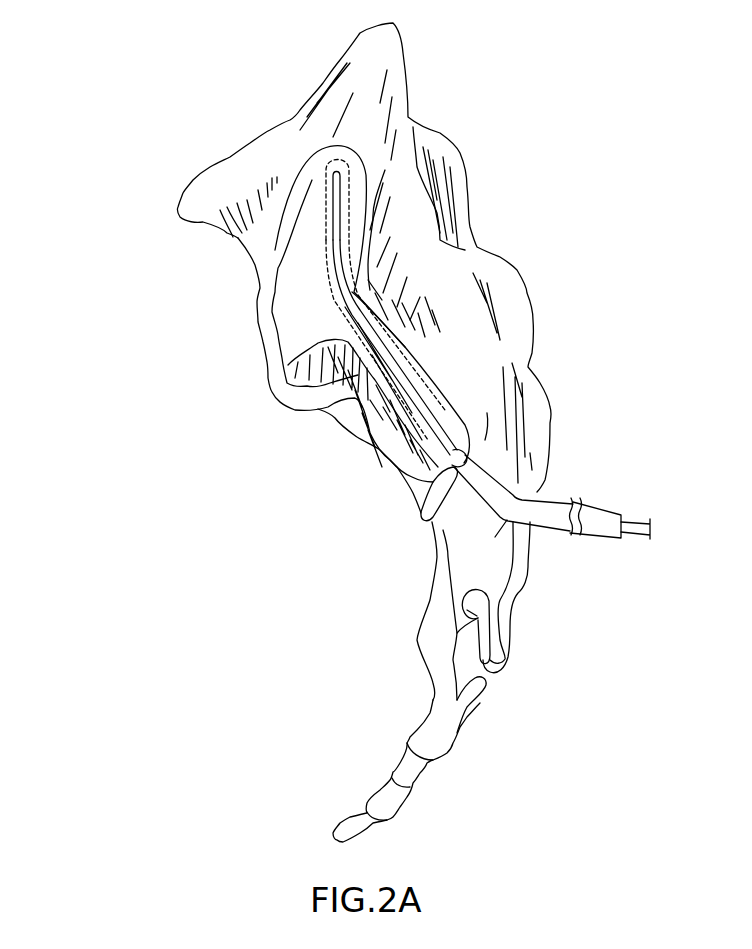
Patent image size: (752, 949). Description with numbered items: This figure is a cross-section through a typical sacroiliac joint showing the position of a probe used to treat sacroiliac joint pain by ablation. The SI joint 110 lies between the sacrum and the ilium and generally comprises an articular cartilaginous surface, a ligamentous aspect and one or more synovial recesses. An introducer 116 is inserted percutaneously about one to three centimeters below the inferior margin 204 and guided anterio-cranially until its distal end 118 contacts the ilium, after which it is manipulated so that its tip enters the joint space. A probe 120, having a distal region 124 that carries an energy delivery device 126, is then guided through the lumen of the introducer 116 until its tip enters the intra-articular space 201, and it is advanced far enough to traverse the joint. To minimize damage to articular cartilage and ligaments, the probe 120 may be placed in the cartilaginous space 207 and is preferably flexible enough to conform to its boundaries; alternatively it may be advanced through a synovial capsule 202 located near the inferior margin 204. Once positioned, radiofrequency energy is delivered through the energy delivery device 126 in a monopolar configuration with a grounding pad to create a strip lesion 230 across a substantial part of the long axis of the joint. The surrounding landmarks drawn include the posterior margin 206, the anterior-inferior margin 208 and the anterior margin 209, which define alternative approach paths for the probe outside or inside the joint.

The SI joint 110 is at (238, 391).
The introducer 116 is at (558, 505).
The distal end of introducer 118 is at (460, 453).
The probe 120 is at (637, 537).
The distal region of probe 124 is at (442, 411).
The energy delivery device 126 is at (347, 293).
The intra-articular space 201 is at (300, 313).
The synovial capsule 202 is at (342, 373).
The inferior margin 204 is at (487, 413).
The posterior margin 206 is at (427, 338).
The cartilaginous space 207 is at (333, 153).
The anterior-inferior margin 208 is at (437, 548).
The anterior margin 209 is at (363, 428).
The strip lesion 230 is at (325, 248).